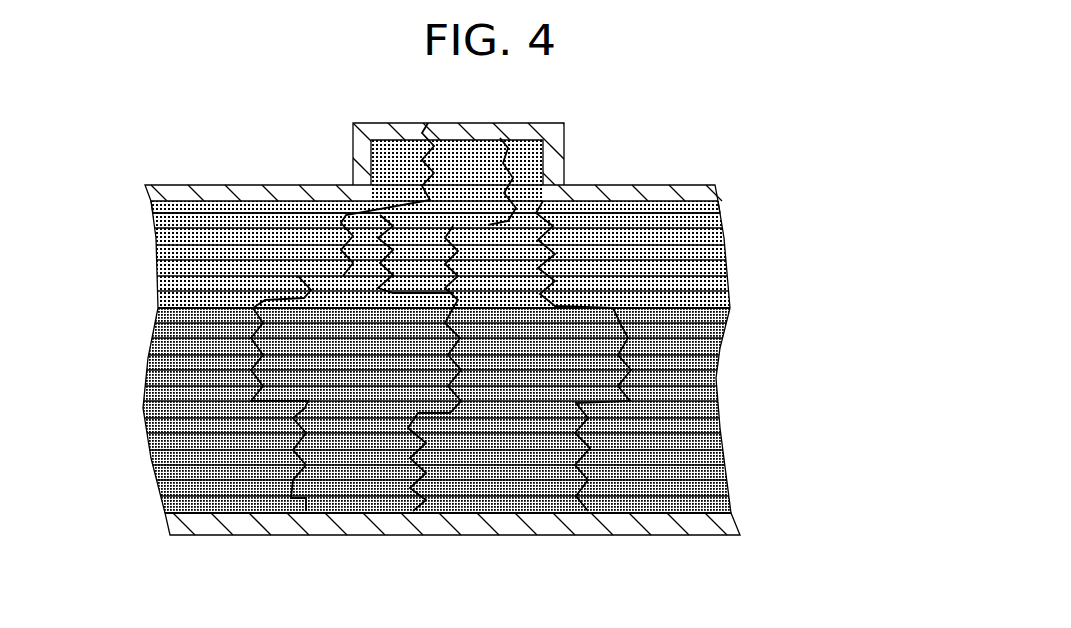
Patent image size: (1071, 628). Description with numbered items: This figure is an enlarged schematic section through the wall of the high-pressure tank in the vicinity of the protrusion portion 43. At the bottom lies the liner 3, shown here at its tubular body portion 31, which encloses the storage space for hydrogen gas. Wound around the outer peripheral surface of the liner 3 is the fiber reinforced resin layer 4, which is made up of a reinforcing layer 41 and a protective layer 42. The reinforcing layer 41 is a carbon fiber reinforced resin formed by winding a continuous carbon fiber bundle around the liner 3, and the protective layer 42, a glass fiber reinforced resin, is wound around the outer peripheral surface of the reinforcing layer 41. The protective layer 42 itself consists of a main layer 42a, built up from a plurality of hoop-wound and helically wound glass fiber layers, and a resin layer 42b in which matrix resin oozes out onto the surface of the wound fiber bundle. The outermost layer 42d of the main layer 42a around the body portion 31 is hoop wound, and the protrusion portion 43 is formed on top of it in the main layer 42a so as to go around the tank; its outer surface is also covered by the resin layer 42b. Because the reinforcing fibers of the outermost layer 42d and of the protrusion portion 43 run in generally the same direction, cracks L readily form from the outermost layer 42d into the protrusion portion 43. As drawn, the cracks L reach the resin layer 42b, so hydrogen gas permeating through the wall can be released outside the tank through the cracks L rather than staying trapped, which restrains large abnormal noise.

The fiber reinforced resin layer 4 is at (825, 187).
The protective layer 42 is at (778, 163).
The main layer 42a is at (702, 229).
The resin layer 42b is at (697, 183).
The outermost layer 42d is at (153, 200).
The reinforcing layer 41 is at (693, 372).
The protrusion portion 43 is at (542, 138).
The liner 3 is at (707, 519).
The body portion 31 is at (535, 510).
The cracks L is at (365, 133).